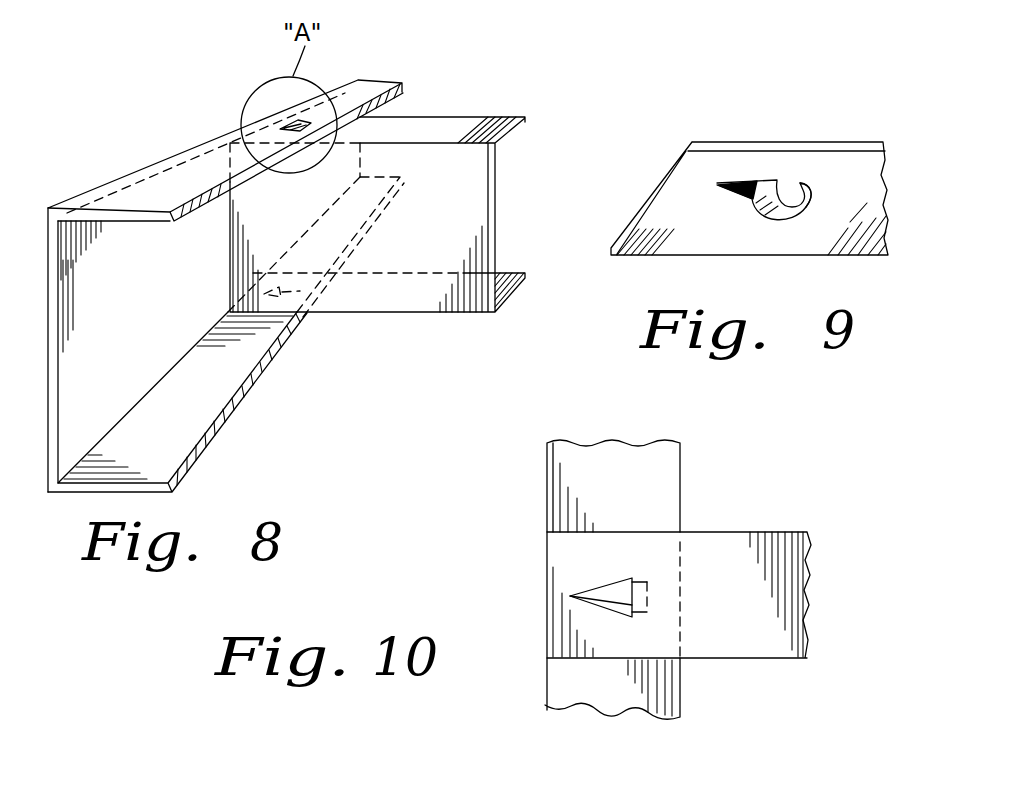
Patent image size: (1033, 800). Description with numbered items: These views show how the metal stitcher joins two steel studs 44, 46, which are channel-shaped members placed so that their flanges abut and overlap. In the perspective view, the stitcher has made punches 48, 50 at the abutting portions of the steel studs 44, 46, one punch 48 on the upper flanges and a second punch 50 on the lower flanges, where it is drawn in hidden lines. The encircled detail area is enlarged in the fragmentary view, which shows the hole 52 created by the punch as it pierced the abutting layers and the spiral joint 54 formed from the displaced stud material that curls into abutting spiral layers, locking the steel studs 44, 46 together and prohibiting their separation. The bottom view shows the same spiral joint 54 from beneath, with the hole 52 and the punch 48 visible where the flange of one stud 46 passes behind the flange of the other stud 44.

In FIG. 8, the steel stud 44 is at (465, 125).
In FIG. 9, the steel stud 44 is at (749, 198).
In FIG. 10, the steel stud 44 is at (745, 565).
In FIG. 8, the steel stud 46 is at (148, 190).
In FIG. 10, the steel stud 46 is at (582, 478).
In FIG. 8, the punch 48 is at (288, 118).
In FIG. 9, the punch 48 is at (777, 182).
In FIG. 10, the punch 48 is at (597, 587).
In FIG. 8, the punch 50 is at (283, 295).
In FIG. 9, the hole 52 is at (758, 184).
In FIG. 10, the hole 52 is at (607, 597).
In FIG. 9, the spiral joint 54 is at (787, 215).
In FIG. 10, the spiral joint 54 is at (650, 582).